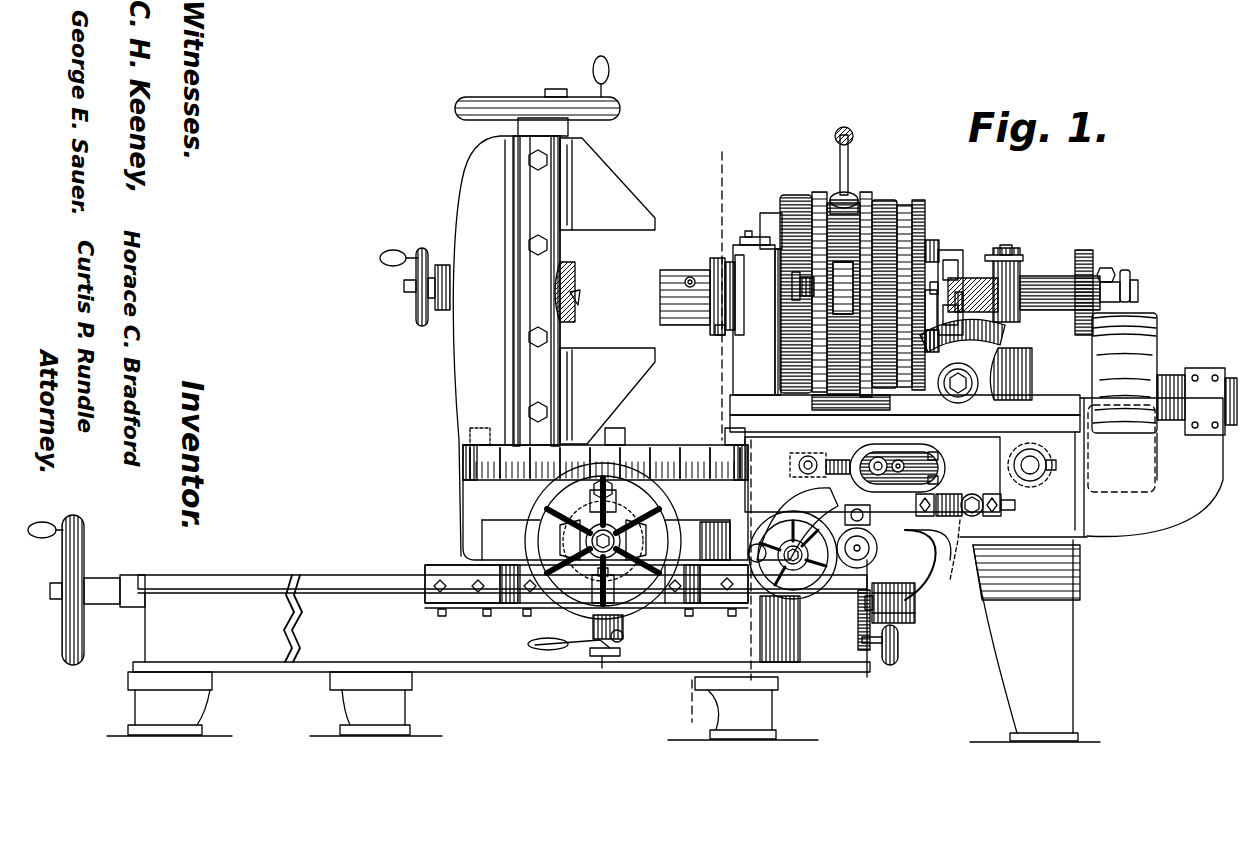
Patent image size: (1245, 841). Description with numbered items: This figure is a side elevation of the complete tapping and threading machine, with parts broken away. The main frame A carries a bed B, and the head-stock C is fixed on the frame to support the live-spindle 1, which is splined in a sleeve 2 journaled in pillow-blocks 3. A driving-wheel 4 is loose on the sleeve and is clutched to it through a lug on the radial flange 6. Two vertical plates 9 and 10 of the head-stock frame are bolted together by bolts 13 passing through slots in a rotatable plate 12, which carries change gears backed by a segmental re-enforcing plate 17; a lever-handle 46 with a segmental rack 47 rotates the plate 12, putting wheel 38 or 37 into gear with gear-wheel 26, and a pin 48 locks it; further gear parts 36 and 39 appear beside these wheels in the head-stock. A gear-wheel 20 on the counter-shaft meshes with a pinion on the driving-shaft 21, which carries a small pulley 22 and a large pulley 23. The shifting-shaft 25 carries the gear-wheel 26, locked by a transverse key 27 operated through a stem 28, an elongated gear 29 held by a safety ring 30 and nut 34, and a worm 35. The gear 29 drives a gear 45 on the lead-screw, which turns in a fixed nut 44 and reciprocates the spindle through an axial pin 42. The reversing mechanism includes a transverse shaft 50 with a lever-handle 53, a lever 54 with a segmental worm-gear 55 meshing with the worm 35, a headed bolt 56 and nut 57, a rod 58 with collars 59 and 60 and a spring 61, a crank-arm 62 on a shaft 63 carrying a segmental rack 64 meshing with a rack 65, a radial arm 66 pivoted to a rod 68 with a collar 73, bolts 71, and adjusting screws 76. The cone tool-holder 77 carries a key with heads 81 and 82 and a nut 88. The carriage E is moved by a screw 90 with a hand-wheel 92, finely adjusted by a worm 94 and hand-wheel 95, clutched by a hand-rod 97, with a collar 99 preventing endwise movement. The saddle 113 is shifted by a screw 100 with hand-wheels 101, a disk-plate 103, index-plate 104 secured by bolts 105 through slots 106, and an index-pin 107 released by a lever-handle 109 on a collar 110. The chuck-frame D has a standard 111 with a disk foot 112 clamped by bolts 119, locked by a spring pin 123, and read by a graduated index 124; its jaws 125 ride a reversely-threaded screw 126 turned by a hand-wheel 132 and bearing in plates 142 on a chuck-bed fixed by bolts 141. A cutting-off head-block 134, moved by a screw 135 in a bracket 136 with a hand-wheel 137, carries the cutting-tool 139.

The live-spindle 1 is at (712, 308).
The sleeve 2 is at (730, 308).
The pillow-blocks 3 is at (726, 262).
The driving-wheel 4 is at (790, 205).
The circular radially-projecting flange 6 is at (780, 360).
The vertical plate 9 is at (850, 210).
The vertical plate 10 is at (815, 195).
The plate 12 is at (812, 400).
The bolts 13 is at (785, 318).
The segmental re-enforcing plate 17 is at (764, 222).
The gear-wheel 20 is at (916, 205).
The driving-shaft 21 is at (1238, 395).
The small pulley 22 is at (1010, 360).
The large pulley 23 is at (1124, 396).
The shifting-shaft 25 is at (962, 280).
The gear-wheel 26 is at (934, 282).
The transverse key 27 is at (958, 290).
The stem 28 is at (1128, 285).
The elongated pinion or gear 29 is at (1048, 290).
The collar or ring 30 is at (1110, 272).
The nut 34 is at (1138, 292).
The worm 35 is at (970, 278).
The gear 36 is at (882, 200).
The wheel 37 is at (903, 205).
The wheel 38 is at (936, 375).
The collar 39 is at (928, 240).
The axial pin 42 is at (1112, 288).
The fixed nut 44 is at (1018, 268).
The gear 45 is at (1088, 260).
The lever-handle 46 is at (840, 157).
The segmental rack 47 is at (864, 205).
The pin 48 is at (792, 288).
The short transverse shaft 50 is at (1040, 470).
The radial lever-handle 53 is at (1023, 465).
The lever 54 is at (975, 418).
The segmental worm-gear 55 is at (958, 361).
The headed bolt 56 is at (940, 516).
The nut 57 is at (972, 516).
The rod 58 is at (1015, 505).
The collar 59 is at (975, 518).
The collar 60 is at (940, 560).
The spring 61 is at (950, 585).
The crank-arm 62 is at (808, 505).
The shaft 63 is at (862, 552).
The segmental rack 64 is at (918, 595).
The segmental rack 65 is at (958, 580).
The radial arm 66 is at (900, 458).
The rod 68 is at (876, 458).
The bolts 71 is at (803, 458).
The collar 73 is at (860, 462).
The screws 76 is at (930, 452).
The cone-head or tool-holder 77 is at (680, 295).
The enlarged head 81 is at (690, 270).
The smaller exterior-faced head 82 is at (684, 282).
The nut 88 is at (712, 262).
The screw 90 is at (918, 598).
The cranked hand-wheel 92 is at (82, 548).
The worm 94 is at (797, 542).
The cranked hand-wheel 95 is at (792, 565).
The sliding hand-rod 97 is at (898, 645).
The loose collar 99 is at (893, 612).
The screw 100 is at (620, 542).
The cranked hand-wheels 101 is at (665, 510).
The disk-plate 103 is at (580, 556).
The annular index-plate 104 is at (566, 550).
The bolts 105 is at (650, 500).
The segmental slots 106 is at (560, 535).
The index-pin 107 is at (596, 588).
The lever-handle 109 is at (572, 646).
The collar 110 is at (623, 626).
The standard 111 is at (468, 330).
The circular or disk foot 112 is at (463, 462).
The saddle 113 is at (470, 500).
The bolts 119 is at (475, 428).
The spring-actuated pin 123 is at (594, 490).
The graduated peripheral index 124 is at (628, 470).
The movable jaws 125 is at (607, 291).
The right and left handed screw 126 is at (568, 76).
The cranked hand-wheel 132 is at (490, 100).
The head-block 134 is at (572, 270).
The screw 135 is at (430, 262).
The bracket 136 is at (454, 285).
The cranked hand-wheel 137 is at (416, 270).
The cutting-tool 139 is at (588, 295).
The bolts 141 is at (538, 168).
The plates 142 is at (570, 128).
The main frame A is at (1070, 578).
The bed B is at (501, 618).
The head-stock C is at (754, 313).
The chuck-frame D is at (503, 489).
The carriage E is at (586, 590).